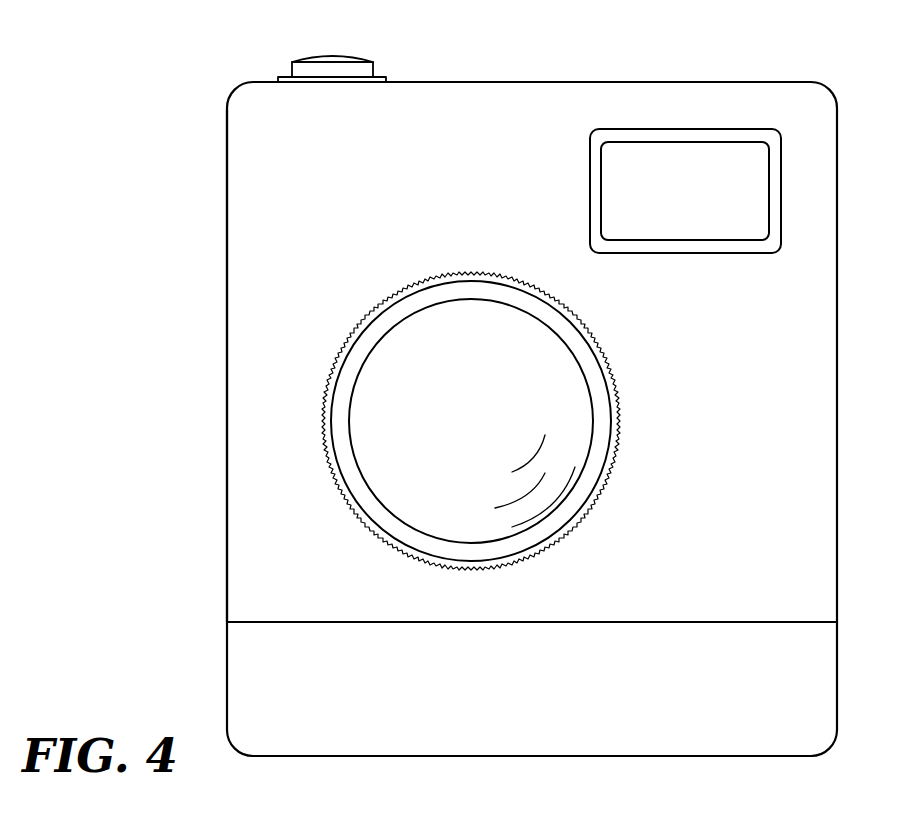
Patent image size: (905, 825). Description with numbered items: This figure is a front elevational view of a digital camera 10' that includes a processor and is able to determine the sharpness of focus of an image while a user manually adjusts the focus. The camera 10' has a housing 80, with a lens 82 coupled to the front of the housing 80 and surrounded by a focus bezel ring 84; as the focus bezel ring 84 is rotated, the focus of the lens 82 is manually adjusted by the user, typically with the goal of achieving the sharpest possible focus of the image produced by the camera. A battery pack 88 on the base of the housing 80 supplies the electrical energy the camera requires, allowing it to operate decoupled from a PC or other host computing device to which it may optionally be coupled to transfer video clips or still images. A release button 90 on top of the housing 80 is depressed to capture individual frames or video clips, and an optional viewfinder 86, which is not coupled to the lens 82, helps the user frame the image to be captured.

The camera 10' is at (468, 419).
The housing 80 is at (231, 472).
The lens 82 is at (380, 478).
The focus bezel ring 84 is at (323, 407).
The viewfinder 86 is at (710, 150).
The battery pack 88 is at (228, 636).
The release button 90 is at (373, 68).